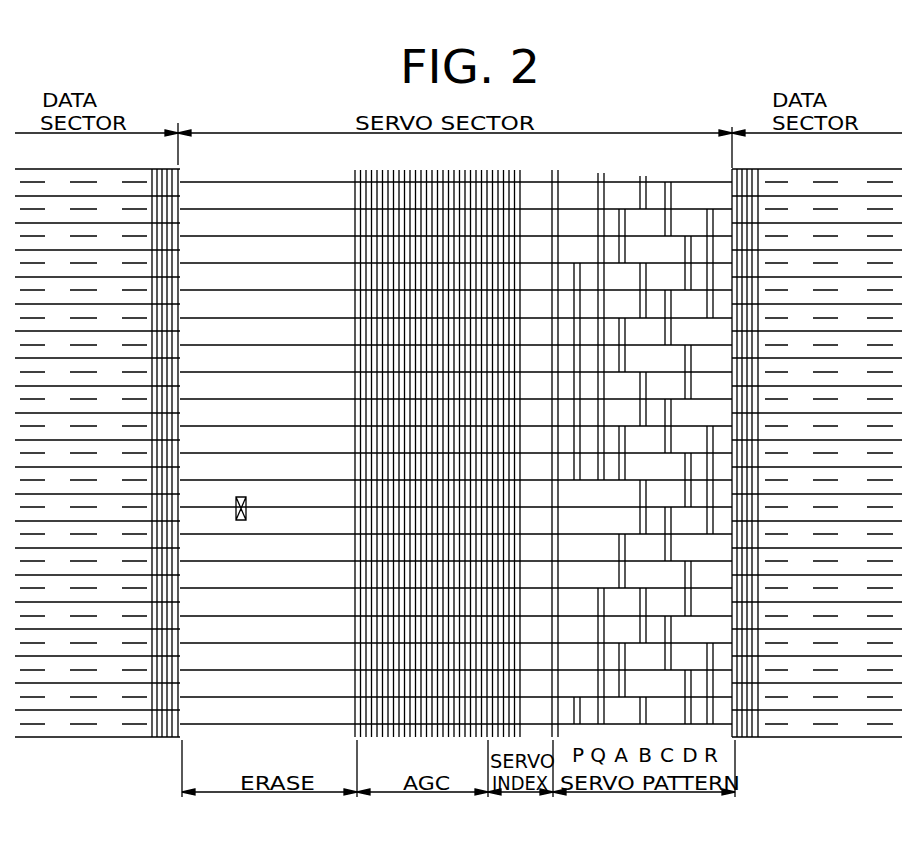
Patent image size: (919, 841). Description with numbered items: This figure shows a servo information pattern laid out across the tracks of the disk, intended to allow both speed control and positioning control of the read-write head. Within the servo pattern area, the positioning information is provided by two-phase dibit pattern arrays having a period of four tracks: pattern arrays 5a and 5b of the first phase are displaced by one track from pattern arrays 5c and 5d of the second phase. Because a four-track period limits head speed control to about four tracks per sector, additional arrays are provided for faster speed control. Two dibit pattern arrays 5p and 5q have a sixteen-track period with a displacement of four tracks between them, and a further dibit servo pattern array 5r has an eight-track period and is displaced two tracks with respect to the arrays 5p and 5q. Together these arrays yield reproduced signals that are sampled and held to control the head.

The dibit pattern array 5p is at (575, 440).
The dibit pattern array 5q is at (597, 173).
The pattern array of the first phase 5a is at (622, 426).
The pattern array of the first phase 5b is at (642, 173).
The pattern array of the second phase 5c is at (665, 413).
The pattern array of the second phase 5d is at (688, 173).
The dibit servo pattern array 5r is at (708, 440).